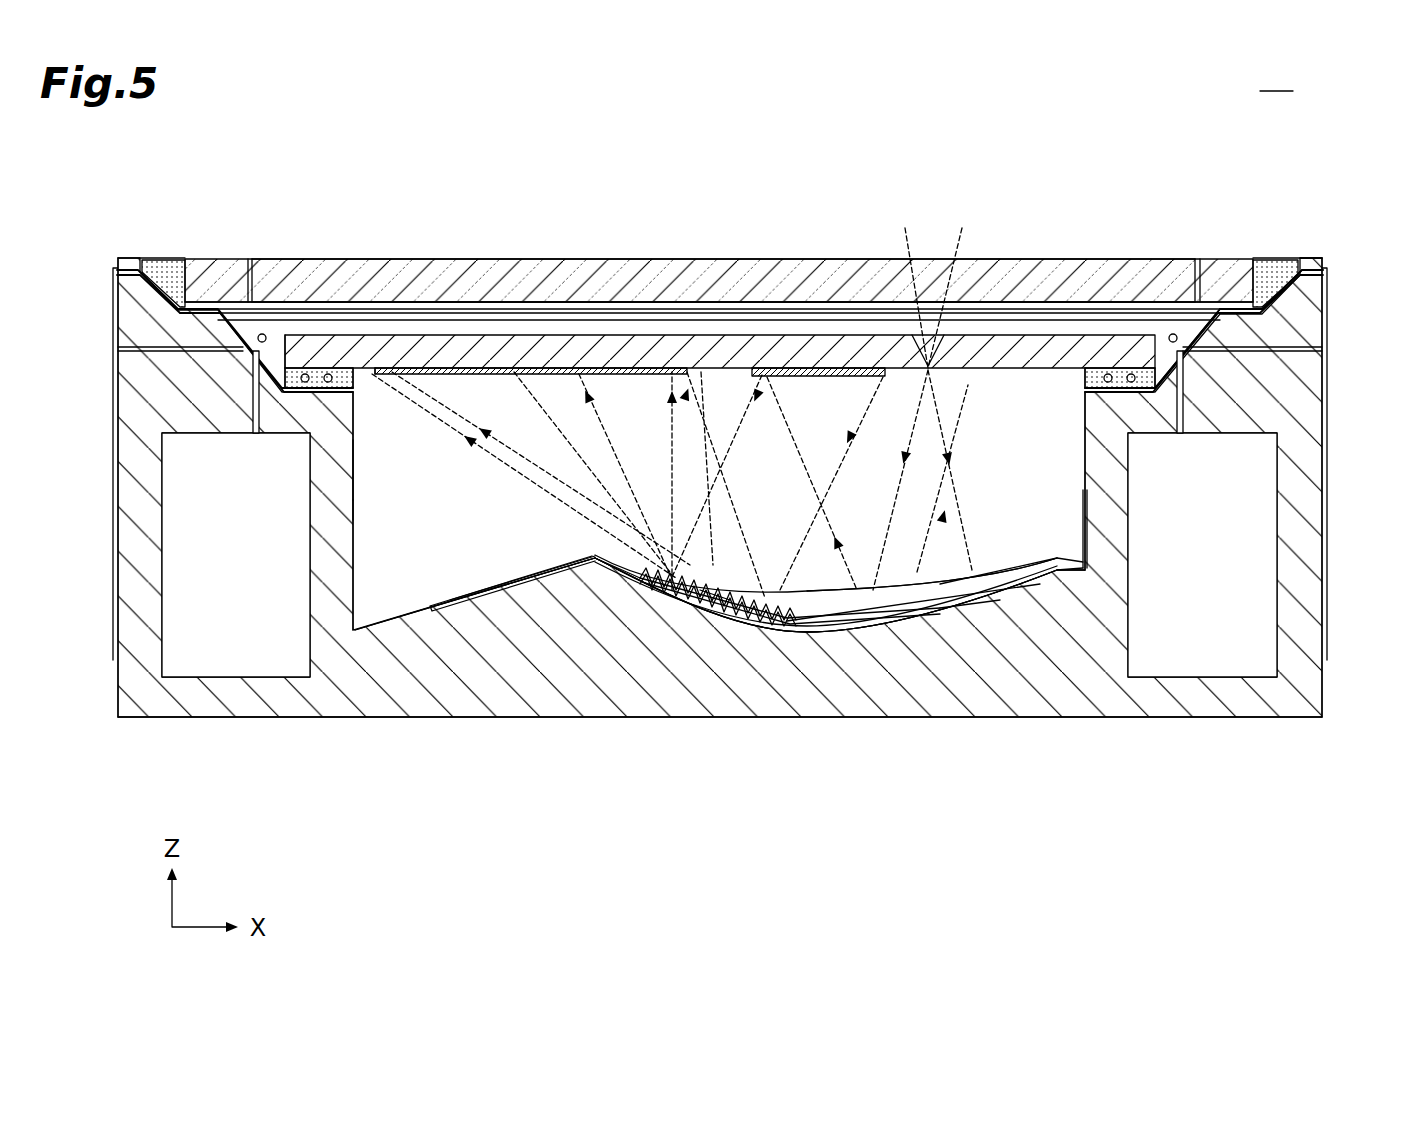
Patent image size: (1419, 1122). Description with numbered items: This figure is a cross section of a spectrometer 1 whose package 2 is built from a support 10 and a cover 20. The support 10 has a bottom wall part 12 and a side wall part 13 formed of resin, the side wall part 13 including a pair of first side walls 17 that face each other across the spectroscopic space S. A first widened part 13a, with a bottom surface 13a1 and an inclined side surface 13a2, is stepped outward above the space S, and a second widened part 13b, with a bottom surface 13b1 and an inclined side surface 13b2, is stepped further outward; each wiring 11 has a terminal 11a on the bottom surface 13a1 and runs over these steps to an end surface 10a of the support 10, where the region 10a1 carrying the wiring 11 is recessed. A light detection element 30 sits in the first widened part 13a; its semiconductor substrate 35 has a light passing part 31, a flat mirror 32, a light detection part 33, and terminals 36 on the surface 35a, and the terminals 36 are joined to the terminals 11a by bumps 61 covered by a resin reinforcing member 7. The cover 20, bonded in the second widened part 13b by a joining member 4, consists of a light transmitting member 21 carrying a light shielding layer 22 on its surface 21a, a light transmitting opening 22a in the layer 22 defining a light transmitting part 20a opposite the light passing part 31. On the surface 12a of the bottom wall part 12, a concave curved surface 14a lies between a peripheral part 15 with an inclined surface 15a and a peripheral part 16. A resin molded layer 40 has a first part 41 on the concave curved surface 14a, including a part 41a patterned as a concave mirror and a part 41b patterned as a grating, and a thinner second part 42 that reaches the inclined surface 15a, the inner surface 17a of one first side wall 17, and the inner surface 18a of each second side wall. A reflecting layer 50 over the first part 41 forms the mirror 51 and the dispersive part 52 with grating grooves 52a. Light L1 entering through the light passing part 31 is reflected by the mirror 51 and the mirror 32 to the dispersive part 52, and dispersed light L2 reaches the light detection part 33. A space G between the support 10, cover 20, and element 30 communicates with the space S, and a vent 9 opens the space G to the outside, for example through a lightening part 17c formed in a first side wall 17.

The spectrometer 1 is at (1152, 146).
The package 2 is at (270, 722).
The joining member 4 is at (162, 280).
The reinforcing member 7 is at (368, 386).
The vent 9 is at (262, 334).
The support 10 is at (385, 717).
The end surface 10a is at (1288, 258).
The region 10a1 is at (1318, 260).
The wiring 11 is at (170, 347).
The terminal 11a is at (288, 352).
The bottom wall part 12 is at (660, 690).
The surface 12a is at (522, 594).
The side wall part 13 is at (121, 258).
The first widened part 13a is at (1120, 312).
The bottom surface 13a1 is at (1130, 300).
The side surface 13a2 is at (1165, 300).
The second widened part 13b is at (1205, 310).
The bottom surface 13b1 is at (1232, 310).
The side surface 13b2 is at (1262, 300).
The concave curved surface 14a is at (880, 598).
The peripheral part 15 is at (360, 626).
The inclined surface 15a is at (450, 600).
The peripheral part 16 is at (1090, 572).
The first side wall 17 is at (140, 410).
The inner surface 17a is at (356, 472).
The lightening part 17c is at (180, 650).
The inner surface 18a is at (372, 474).
The cover 20 is at (455, 280).
The light transmitting part 20a is at (880, 295).
The light transmitting member 21 is at (500, 305).
The surface 21a is at (555, 320).
The light shielding layer 22 is at (410, 290).
The light transmitting opening 22a is at (935, 305).
The light detection element 30 is at (615, 350).
The light passing part 31 is at (945, 337).
The mirror 32 is at (820, 378).
The light detection part 33 is at (440, 376).
The substrate 35 is at (665, 368).
The surface 35a is at (377, 376).
The terminal 36 is at (332, 368).
The resin molded layer 40 is at (600, 580).
The first part 41 is at (830, 632).
The part 41a is at (928, 612).
The part 41b is at (730, 620).
The second part 42 is at (505, 605).
The reflecting layer 50 is at (800, 630).
The mirror 51 is at (975, 588).
The dispersive part 52 is at (792, 614).
The grating groove 52a is at (713, 600).
The bump 61 is at (316, 375).
The space G is at (760, 330).
The light L1 is at (935, 380).
The light L2 is at (548, 428).
The spectroscopic space S is at (374, 524).